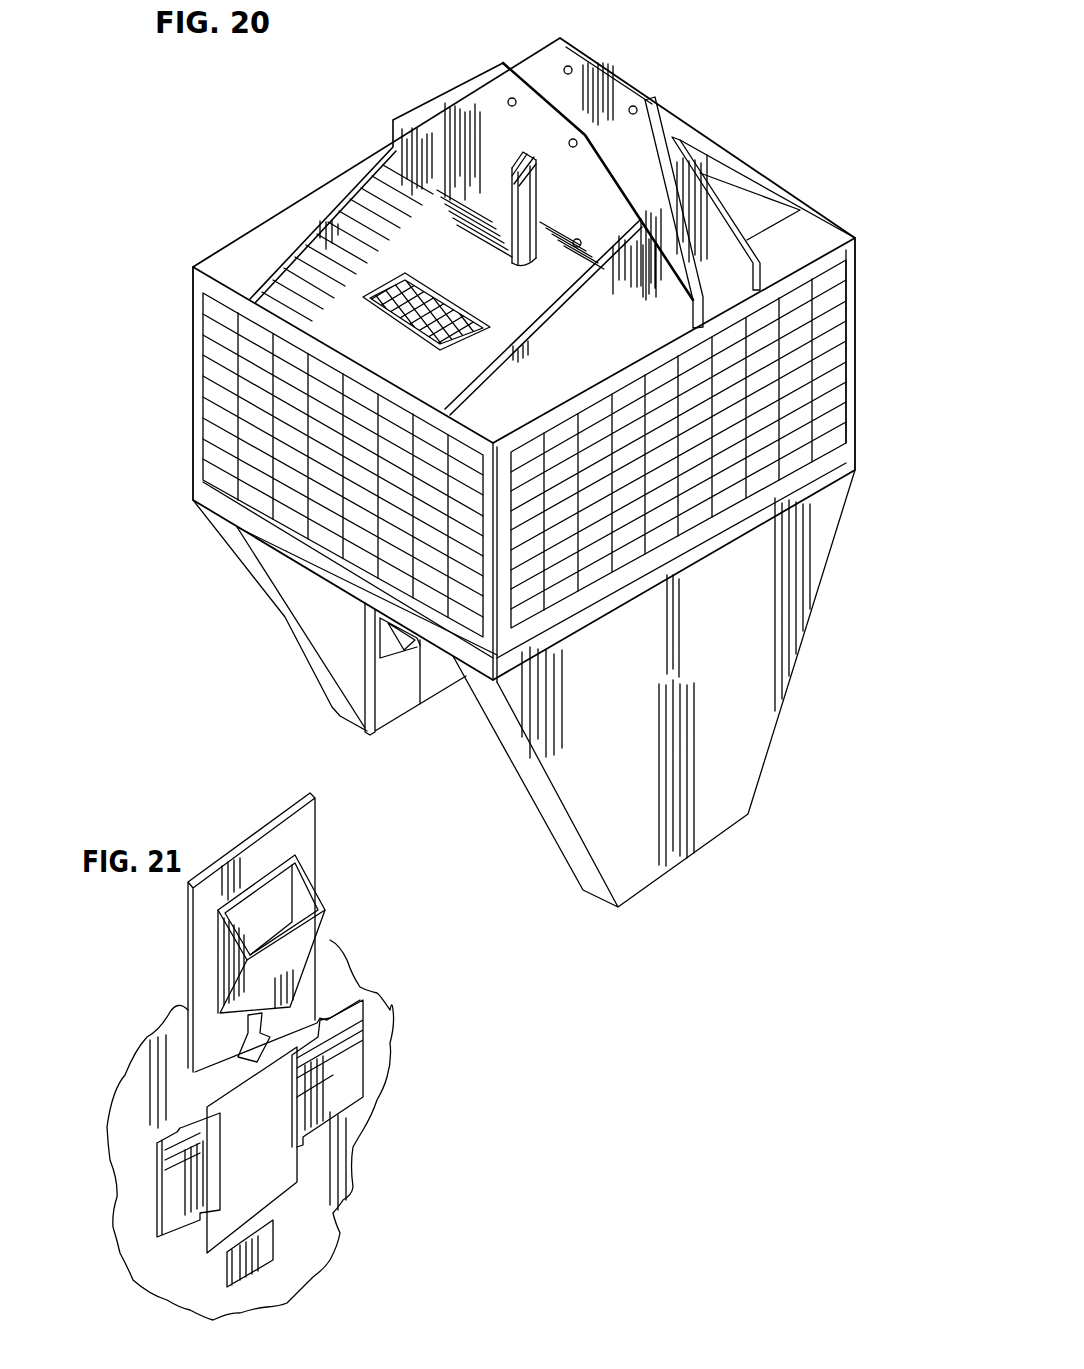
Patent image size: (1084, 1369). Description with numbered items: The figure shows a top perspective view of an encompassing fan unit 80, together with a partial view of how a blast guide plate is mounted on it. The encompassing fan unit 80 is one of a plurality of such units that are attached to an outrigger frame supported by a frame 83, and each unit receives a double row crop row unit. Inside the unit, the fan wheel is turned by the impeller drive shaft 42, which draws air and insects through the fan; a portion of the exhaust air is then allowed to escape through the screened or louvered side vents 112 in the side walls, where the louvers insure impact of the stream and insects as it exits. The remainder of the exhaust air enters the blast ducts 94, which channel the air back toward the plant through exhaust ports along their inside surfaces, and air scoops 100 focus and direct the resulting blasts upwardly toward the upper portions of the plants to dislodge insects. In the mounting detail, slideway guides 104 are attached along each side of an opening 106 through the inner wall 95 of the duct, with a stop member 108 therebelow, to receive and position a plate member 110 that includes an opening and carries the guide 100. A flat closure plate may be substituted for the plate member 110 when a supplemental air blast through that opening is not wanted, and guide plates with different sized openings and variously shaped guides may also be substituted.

In FIG. 20, the encompassing fan unit 80 is at (267, 252).
In FIG. 20, the impeller drive shaft 42 is at (510, 183).
In FIG. 20, the frame 83 is at (620, 92).
In FIG. 20, the side vents 112 is at (255, 398).
In FIG. 20, the blast duct 94 is at (243, 587).
In FIG. 20, the air scoop 100 is at (408, 632).
In FIG. 21, the air scoop 100 is at (352, 940).
In FIG. 21, the plate member 110 is at (293, 842).
In FIG. 21, the slideway guides 104 is at (330, 1063).
In FIG. 21, the inner wall 95 is at (357, 1133).
In FIG. 21, the opening 106 is at (272, 1167).
In FIG. 21, the stop member 108 is at (252, 1248).